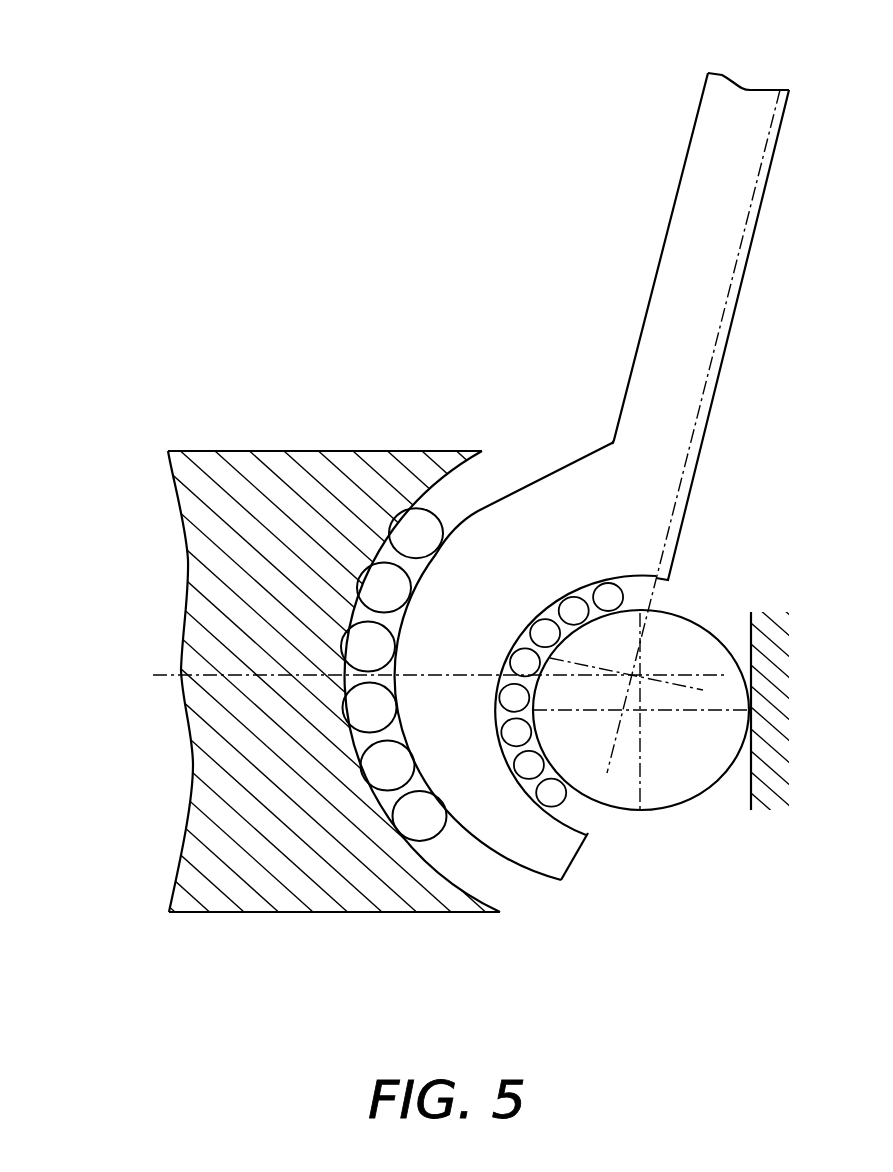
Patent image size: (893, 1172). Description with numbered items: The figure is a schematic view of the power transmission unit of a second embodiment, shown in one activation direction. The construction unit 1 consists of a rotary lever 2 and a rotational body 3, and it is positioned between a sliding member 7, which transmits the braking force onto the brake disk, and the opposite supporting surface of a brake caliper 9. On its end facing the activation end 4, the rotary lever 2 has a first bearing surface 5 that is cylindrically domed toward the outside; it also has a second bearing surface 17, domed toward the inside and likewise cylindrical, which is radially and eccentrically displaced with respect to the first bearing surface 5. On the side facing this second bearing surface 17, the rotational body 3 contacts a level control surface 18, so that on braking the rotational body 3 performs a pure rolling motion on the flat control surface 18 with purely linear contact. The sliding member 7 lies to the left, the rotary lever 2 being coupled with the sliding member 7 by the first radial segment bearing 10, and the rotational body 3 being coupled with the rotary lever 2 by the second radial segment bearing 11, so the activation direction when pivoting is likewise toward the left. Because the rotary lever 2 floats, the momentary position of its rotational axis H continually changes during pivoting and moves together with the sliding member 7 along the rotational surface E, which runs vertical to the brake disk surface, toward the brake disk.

The construction unit 1 is at (612, 878).
The rotary lever 2 is at (715, 395).
The rotational body 3 is at (694, 760).
The activation end 4 is at (747, 88).
The first bearing surface 5 is at (533, 618).
The sliding member 7 is at (213, 888).
The brake caliper 9 is at (801, 682).
The first radial segment bearing 10 is at (382, 583).
The second radial segment bearing 11 is at (603, 832).
The second bearing surface 17 is at (552, 596).
The control surface 18 is at (745, 624).
The rotational surface E is at (175, 667).
The rotational axis H is at (645, 667).